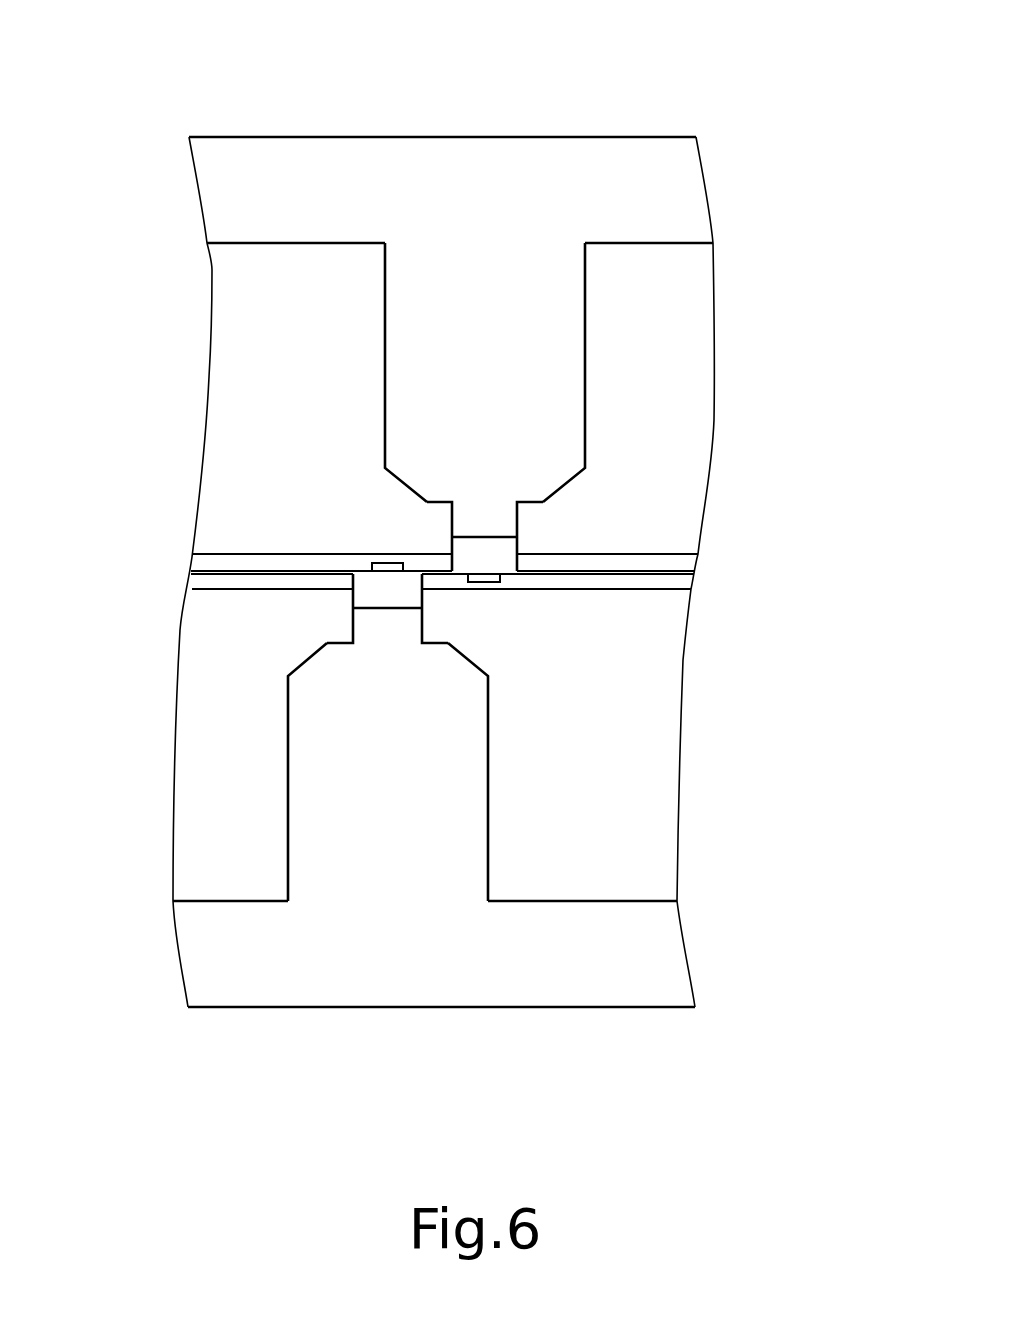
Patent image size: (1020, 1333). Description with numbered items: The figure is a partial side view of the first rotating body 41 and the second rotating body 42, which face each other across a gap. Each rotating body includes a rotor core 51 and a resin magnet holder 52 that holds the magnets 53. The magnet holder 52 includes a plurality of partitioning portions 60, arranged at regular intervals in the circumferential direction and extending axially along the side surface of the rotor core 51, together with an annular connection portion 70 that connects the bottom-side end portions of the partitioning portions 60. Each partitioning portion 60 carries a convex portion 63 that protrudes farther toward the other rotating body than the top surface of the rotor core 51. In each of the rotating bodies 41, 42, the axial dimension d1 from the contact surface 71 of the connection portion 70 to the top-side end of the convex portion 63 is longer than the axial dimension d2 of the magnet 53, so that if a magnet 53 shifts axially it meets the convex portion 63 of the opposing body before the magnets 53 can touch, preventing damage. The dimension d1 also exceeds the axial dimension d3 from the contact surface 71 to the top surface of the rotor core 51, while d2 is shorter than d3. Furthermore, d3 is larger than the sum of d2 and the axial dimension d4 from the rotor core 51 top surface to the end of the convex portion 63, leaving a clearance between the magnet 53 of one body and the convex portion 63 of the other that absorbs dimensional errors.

The first rotating body 41 is at (727, 963).
The second rotating body 42 is at (742, 199).
The rotor core 51 is at (672, 562).
The magnet holder 52 is at (347, 38).
The magnet 53 is at (240, 380).
The partitioning portion 60 is at (467, 375).
The convex portion 63 is at (388, 567).
The connection portion 70 is at (335, 190).
The contact surface 71 is at (237, 245).
The axial dimension from contact surface to convex portion end d1 is at (81, 563).
The axial dimension of magnet d2 is at (700, 589).
The axial dimension from contact surface to rotor core top surface d3 is at (703, 572).
The axial dimension from rotor core top surface to convex portion end d4 is at (508, 581).